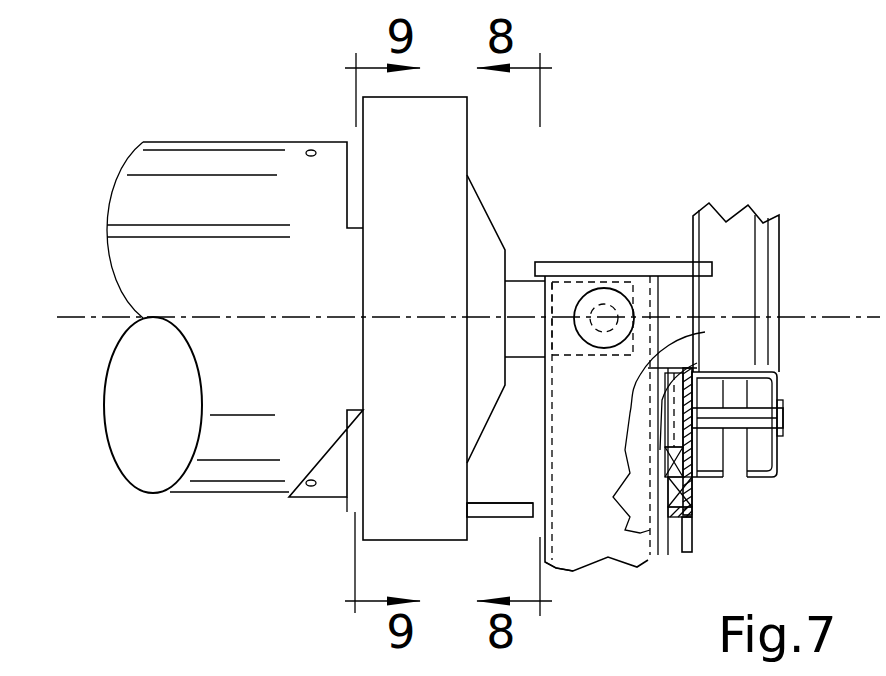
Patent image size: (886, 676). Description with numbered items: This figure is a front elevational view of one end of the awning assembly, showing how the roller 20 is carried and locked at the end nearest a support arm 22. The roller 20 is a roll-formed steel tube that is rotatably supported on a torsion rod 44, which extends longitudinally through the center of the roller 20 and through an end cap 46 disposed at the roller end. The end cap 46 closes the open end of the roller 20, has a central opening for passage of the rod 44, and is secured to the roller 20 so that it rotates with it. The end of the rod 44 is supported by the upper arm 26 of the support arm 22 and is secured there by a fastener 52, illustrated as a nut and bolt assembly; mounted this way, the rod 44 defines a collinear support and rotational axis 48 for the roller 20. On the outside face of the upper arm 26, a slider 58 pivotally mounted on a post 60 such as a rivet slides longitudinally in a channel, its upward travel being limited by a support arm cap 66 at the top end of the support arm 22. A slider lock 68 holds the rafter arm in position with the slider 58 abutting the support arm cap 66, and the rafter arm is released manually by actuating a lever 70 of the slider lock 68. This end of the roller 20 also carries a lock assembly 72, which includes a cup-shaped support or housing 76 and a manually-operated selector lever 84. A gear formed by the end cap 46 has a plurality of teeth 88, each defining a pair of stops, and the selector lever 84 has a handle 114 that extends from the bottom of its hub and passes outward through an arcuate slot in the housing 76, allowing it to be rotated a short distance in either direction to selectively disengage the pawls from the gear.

The roller 20 is at (173, 142).
The support arm 22 is at (782, 233).
The upper arm 26 is at (558, 568).
The torsion rod 44 is at (525, 281).
The end cap 46 is at (318, 140).
The collinear support and rotational axis 48 is at (112, 318).
The fastener 52 is at (588, 291).
The slider 58 is at (682, 367).
The post 60 is at (753, 427).
The support arm cap 66 is at (670, 262).
The slider lock 68 is at (682, 447).
The lever 70 is at (692, 537).
The lock assembly 72 is at (347, 512).
The cup-shaped support or housing 76 is at (468, 157).
The selector lever 84 is at (497, 518).
The teeth 88 is at (780, 272).
The handle 114 is at (512, 503).